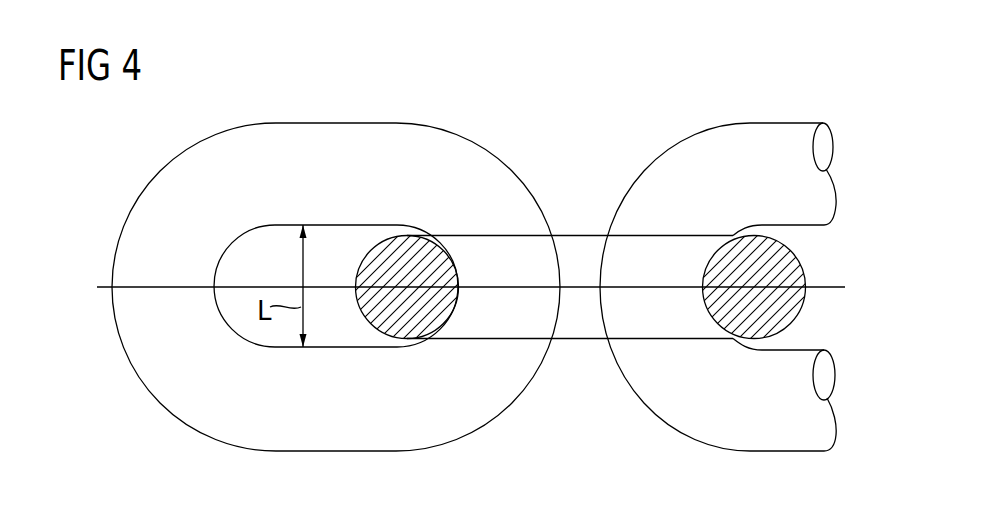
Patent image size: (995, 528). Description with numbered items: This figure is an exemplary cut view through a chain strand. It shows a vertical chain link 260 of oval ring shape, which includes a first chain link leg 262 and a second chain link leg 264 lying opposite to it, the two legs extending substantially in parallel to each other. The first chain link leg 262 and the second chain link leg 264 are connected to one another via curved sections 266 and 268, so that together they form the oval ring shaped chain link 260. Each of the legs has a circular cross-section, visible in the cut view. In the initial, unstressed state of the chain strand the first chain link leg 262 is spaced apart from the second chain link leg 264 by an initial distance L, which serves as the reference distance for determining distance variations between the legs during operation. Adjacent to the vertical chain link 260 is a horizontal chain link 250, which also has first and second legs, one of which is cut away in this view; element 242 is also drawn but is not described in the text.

The vertical chain link 260 is at (492, 138).
The first chain link leg 262 is at (341, 143).
The second chain link leg 264 is at (339, 433).
The curved section 266 is at (128, 253).
The curved section 268 is at (509, 280).
The strap 242 is at (577, 325).
The horizontal chain link 250 is at (597, 222).